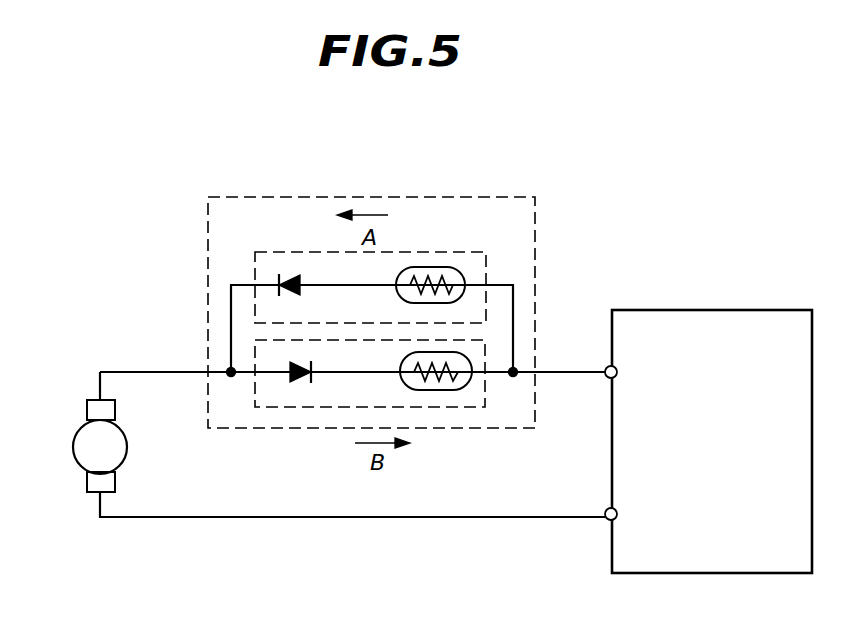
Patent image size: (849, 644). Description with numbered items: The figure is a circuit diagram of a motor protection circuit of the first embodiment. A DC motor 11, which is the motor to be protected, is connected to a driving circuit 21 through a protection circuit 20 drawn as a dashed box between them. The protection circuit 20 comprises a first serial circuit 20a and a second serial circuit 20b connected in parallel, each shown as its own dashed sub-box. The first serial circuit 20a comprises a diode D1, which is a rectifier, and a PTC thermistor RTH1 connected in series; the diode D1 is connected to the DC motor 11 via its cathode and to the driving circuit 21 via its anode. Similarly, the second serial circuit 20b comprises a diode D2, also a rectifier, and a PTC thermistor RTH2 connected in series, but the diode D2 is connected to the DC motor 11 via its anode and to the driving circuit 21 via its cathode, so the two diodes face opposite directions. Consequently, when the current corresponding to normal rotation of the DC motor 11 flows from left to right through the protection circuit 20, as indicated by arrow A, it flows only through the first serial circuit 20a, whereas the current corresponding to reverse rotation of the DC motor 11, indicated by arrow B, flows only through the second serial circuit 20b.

The DC motor 11 is at (128, 447).
The protection circuit 20 is at (521, 189).
The first serial circuit 20a is at (300, 252).
The second serial circuit 20b is at (300, 407).
The driving circuit 21 is at (720, 310).
The diode D1 is at (291, 283).
The diode D2 is at (290, 383).
The PTC thermistor RTH1 is at (450, 262).
The PTC thermistor RTH2 is at (459, 390).